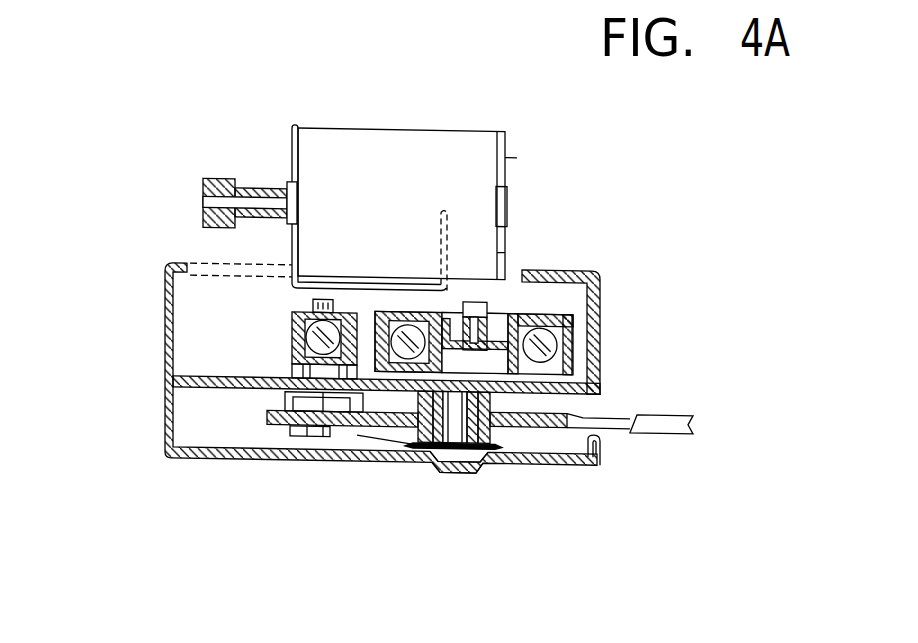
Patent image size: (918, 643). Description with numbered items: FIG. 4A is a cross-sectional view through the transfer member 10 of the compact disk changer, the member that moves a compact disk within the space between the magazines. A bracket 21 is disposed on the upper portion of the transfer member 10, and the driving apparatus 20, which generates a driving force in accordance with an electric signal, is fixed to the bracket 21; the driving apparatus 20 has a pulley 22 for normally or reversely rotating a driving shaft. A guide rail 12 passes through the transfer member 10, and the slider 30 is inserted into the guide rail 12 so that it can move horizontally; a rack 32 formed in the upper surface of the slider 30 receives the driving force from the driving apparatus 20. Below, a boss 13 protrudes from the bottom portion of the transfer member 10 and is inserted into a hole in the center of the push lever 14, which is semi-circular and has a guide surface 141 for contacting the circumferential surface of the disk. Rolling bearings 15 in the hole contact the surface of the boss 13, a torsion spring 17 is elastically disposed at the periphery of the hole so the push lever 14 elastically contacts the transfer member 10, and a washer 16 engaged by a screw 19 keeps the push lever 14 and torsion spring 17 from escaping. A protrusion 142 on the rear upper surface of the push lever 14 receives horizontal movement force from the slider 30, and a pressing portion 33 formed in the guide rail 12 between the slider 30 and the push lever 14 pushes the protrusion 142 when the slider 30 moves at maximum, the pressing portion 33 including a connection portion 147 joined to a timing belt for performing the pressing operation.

The transfer member 10 is at (163, 354).
The guide rail 12 is at (567, 328).
The boss 13 is at (420, 444).
The push lever 14 is at (648, 410).
The guide surface 141 is at (694, 414).
The protrusion 142 is at (293, 428).
The connection portion 147 is at (313, 302).
The rolling bearings 15 is at (482, 457).
The washer 16 is at (527, 456).
The torsion spring 17 is at (393, 434).
The screw 19 is at (445, 457).
The driving apparatus 20 is at (372, 112).
The bracket 21 is at (292, 126).
The pulley 22 is at (252, 190).
The slider 30 is at (566, 307).
The rack 32 is at (477, 298).
The pressing portion 33 is at (292, 350).